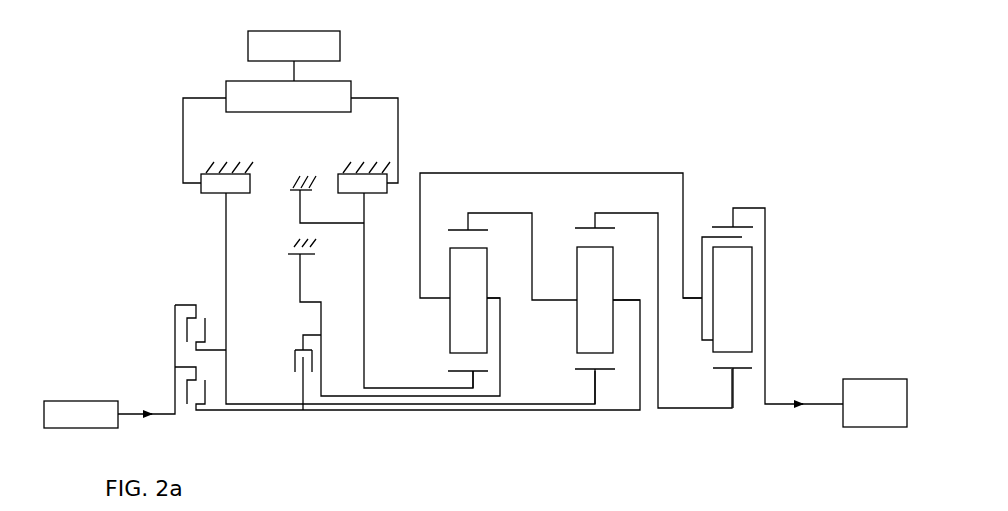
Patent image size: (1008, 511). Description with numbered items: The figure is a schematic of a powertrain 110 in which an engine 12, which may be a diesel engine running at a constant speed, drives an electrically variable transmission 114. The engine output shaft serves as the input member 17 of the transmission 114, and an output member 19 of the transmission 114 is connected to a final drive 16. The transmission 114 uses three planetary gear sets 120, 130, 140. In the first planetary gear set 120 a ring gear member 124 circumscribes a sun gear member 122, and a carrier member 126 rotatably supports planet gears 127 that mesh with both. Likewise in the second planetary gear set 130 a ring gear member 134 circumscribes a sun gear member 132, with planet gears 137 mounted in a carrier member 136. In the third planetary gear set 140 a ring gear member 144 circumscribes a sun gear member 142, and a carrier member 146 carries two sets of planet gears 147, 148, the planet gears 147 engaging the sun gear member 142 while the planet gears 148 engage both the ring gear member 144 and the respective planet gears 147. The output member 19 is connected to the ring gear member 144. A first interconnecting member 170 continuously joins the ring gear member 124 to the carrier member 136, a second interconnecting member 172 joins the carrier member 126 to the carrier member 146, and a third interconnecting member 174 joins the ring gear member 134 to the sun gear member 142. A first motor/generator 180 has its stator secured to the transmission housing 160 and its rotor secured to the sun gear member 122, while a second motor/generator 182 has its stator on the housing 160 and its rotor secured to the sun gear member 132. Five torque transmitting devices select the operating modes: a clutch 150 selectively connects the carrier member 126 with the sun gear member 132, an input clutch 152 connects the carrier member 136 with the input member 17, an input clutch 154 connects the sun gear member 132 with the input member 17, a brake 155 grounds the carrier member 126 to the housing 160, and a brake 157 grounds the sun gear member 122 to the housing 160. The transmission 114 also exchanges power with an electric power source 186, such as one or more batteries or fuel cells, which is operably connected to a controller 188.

The powertrain 110 is at (102, 192).
The electrically variable transmission 114 is at (103, 247).
The engine 12 is at (75, 401).
The final drive 16 is at (867, 378).
The input member 17 is at (127, 413).
The output member 19 is at (777, 406).
The planetary gear set 120 is at (465, 375).
The sun gear member 122 is at (475, 373).
The ring gear member 124 is at (450, 229).
The carrier member 126 is at (491, 296).
The planet gears 127 is at (468, 300).
The planetary gear set 130 is at (592, 372).
The sun gear member 132 is at (600, 372).
The ring gear member 134 is at (577, 227).
The carrier member 136 is at (616, 297).
The planet gears 137 is at (595, 300).
The planetary gear set 140 is at (731, 371).
The sun gear member 142 is at (745, 371).
The ring gear member 144 is at (715, 226).
The carrier member 146 is at (698, 305).
The planet gears 147 is at (732, 299).
The planet gears 148 is at (702, 340).
The clutch 150 is at (302, 380).
The input clutch 152 is at (193, 409).
The input clutch 154 is at (192, 343).
The brake 155 is at (315, 255).
The brake 157 is at (288, 193).
The transmission housing 160 is at (206, 168).
The first interconnecting member 170 is at (521, 213).
The second interconnecting member 172 is at (537, 172).
The third interconnecting member 174 is at (620, 212).
The first motor/generator 180 is at (392, 190).
The second motor/generator 182 is at (198, 189).
The electric power source 186 is at (340, 46).
The controller 188 is at (352, 90).